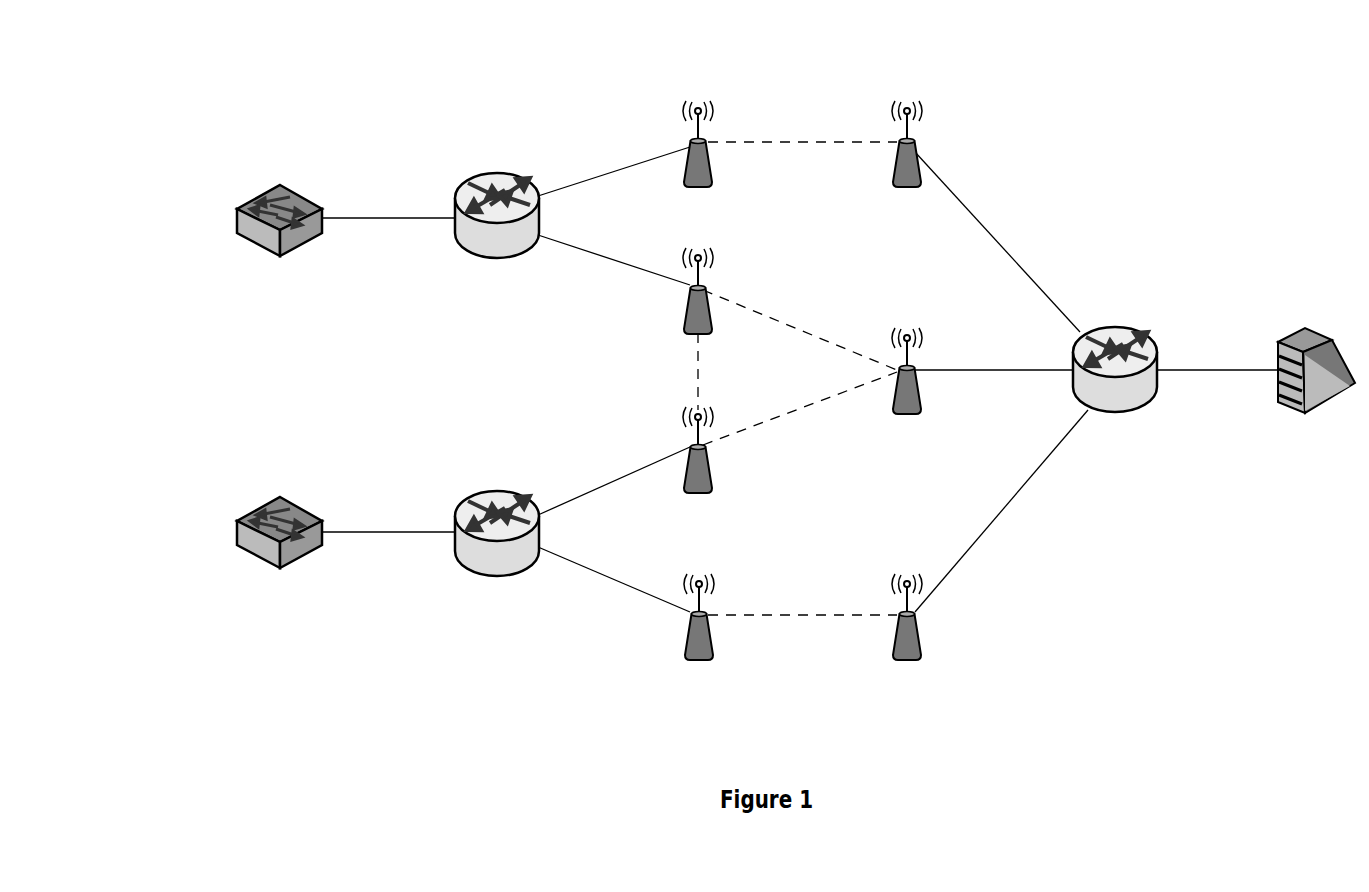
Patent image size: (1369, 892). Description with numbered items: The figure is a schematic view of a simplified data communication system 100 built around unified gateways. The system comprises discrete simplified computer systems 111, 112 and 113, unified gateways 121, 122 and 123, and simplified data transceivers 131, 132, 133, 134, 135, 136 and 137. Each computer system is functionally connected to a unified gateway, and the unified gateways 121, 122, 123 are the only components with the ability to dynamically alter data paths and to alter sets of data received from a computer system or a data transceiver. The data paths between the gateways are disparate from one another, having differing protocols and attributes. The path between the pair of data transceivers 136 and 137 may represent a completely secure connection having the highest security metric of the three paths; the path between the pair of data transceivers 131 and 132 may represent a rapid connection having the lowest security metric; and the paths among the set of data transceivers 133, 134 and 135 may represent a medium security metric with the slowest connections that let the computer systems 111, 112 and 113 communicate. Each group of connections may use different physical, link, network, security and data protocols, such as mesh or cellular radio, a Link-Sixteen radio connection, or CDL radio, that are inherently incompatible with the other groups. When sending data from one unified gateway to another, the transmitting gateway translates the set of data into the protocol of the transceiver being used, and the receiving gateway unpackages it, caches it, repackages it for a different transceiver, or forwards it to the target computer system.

The data communication system 100 is at (130, 123).
The computer system 111 is at (279, 549).
The computer system 112 is at (1316, 386).
The computer system 113 is at (279, 236).
The unified gateway 121 is at (497, 231).
The unified gateway 122 is at (497, 548).
The unified gateway 123 is at (1115, 385).
The data transceiver 131 is at (698, 160).
The data transceiver 132 is at (907, 160).
The data transceiver 133 is at (681, 291).
The data transceiver 134 is at (907, 386).
The data transceiver 135 is at (698, 465).
The data transceiver 136 is at (699, 631).
The data transceiver 137 is at (907, 631).